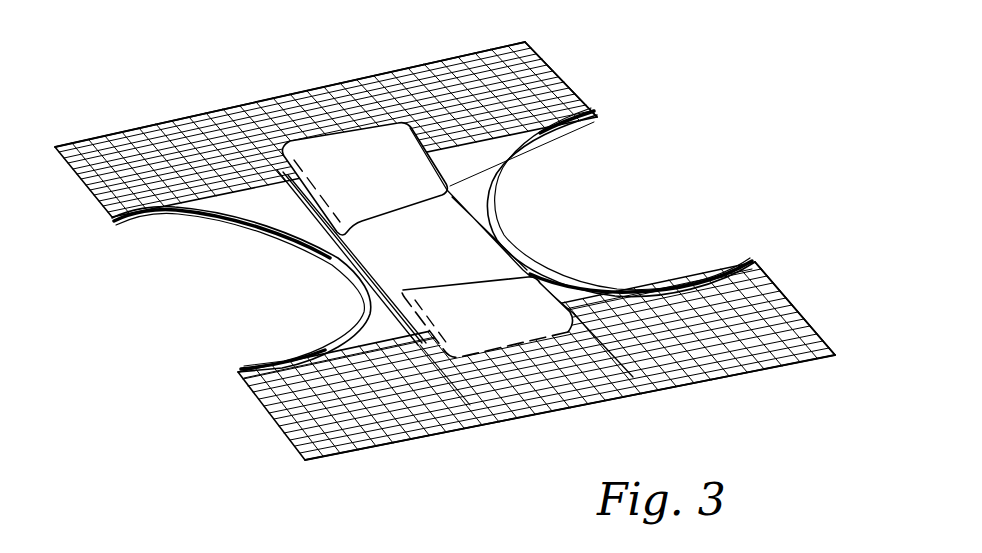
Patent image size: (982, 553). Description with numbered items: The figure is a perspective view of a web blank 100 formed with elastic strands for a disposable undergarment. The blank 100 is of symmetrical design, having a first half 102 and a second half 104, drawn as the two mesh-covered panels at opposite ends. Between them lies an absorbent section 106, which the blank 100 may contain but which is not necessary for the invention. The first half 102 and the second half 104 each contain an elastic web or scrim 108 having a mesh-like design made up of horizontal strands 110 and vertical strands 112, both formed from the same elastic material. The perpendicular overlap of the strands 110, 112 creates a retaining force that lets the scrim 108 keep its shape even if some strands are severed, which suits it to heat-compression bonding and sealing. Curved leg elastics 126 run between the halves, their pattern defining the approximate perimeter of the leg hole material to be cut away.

The web blank 100 is at (115, 101).
The first half 102 is at (277, 420).
The second half 104 is at (75, 182).
The absorbent section 106 is at (353, 265).
The elastic web or scrim 108 is at (777, 290).
The horizontal strands 110 is at (577, 84).
The vertical strands 112 is at (467, 67).
The leg elastics 126 is at (217, 213).